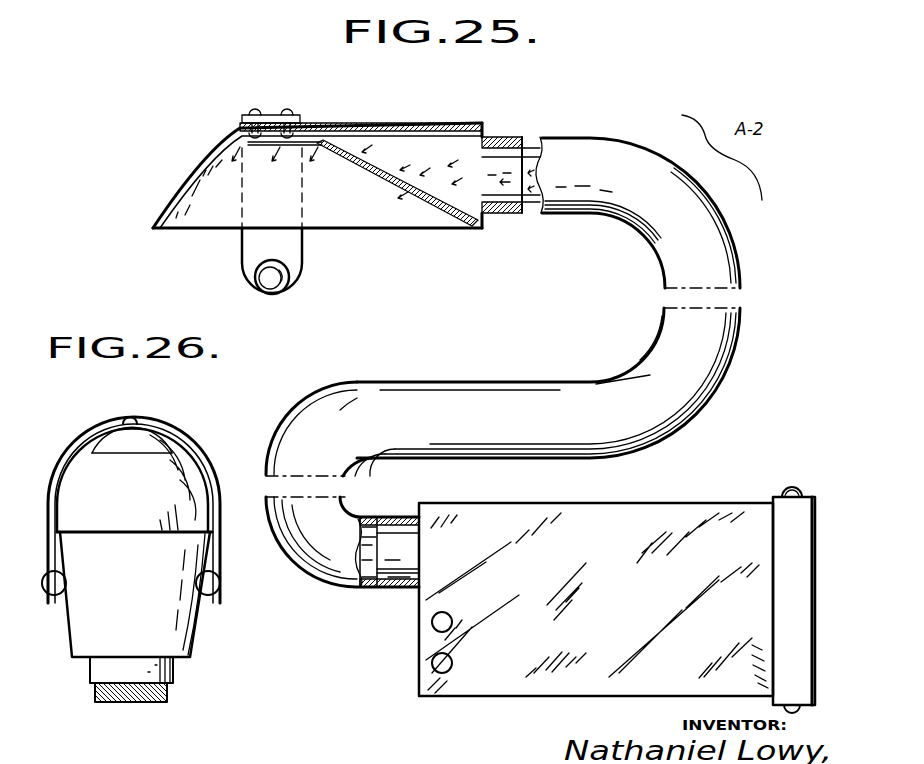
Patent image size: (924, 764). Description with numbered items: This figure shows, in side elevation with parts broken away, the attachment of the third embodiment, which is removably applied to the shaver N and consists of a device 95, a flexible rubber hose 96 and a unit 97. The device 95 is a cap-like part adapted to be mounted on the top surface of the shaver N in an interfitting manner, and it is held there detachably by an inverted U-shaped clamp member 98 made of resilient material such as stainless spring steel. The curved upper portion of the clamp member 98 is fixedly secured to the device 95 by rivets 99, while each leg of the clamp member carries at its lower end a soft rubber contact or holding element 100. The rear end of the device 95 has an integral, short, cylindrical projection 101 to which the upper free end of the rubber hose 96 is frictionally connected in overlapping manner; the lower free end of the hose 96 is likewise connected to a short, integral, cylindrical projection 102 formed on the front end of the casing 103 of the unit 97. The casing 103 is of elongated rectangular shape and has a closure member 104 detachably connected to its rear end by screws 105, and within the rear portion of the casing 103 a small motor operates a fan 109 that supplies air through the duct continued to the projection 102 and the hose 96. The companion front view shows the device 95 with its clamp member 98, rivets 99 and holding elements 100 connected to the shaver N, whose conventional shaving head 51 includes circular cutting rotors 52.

In FIG. 25, the device 95 is at (417, 99).
In FIG. 26, the device 95 is at (170, 477).
In FIG. 25, the flexible rubber hose 96 is at (738, 253).
In FIG. 25, the unit 97 is at (630, 488).
In FIG. 25, the inverted U-shaped clamp member 98 is at (255, 242).
In FIG. 26, the inverted U-shaped clamp member 98 is at (80, 445).
In FIG. 25, the rivets 99 is at (287, 113).
In FIG. 26, the rivets 99 is at (136, 413).
In FIG. 25, the contact or holding element 100 is at (292, 282).
In FIG. 26, the contact or holding element 100 is at (63, 605).
In FIG. 25, the cylindrical projection 101 is at (498, 183).
In FIG. 25, the cylindrical projection 102 is at (395, 560).
In FIG. 25, the casing 103 is at (500, 684).
In FIG. 25, the closure member 104 is at (790, 526).
In FIG. 25, the screws 105 is at (800, 492).
In FIG. 25, the fan 109 is at (432, 668).
In FIG. 26, the shaver N is at (90, 710).
In FIG. 26, the shaving head 51 is at (177, 673).
In FIG. 26, the circular cutting rotors 52 is at (128, 703).